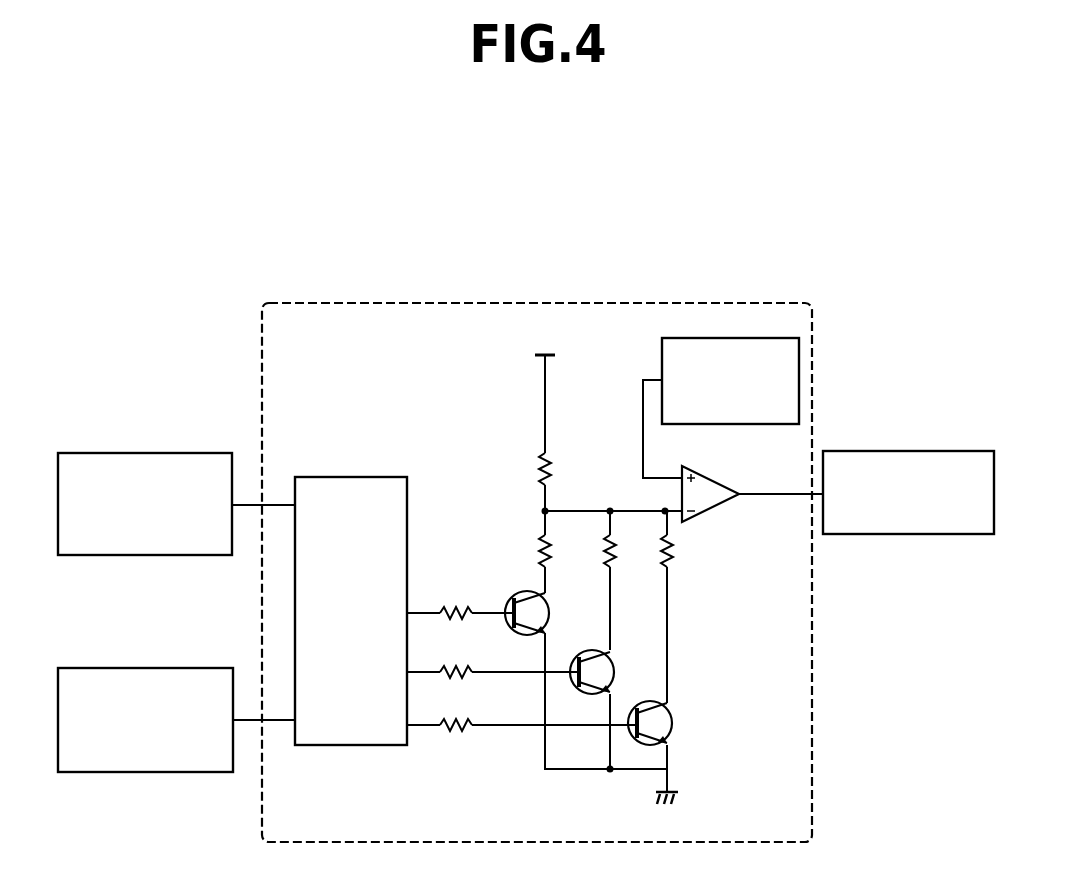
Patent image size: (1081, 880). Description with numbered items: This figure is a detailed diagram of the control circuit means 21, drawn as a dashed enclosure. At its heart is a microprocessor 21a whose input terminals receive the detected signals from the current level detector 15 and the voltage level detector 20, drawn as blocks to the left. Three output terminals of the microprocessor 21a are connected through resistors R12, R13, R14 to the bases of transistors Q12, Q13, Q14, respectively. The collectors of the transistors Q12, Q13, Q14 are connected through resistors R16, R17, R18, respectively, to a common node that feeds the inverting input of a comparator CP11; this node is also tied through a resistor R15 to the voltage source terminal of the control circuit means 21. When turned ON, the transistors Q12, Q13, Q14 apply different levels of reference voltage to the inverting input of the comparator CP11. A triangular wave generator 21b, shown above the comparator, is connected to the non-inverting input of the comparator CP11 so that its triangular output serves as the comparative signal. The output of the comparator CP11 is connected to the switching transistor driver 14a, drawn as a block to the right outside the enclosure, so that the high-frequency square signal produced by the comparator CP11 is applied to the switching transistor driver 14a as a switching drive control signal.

The control circuit means 21 is at (490, 303).
The microprocessor 21a is at (355, 481).
The triangular wave generator 21b is at (662, 354).
The current level detector 15 is at (95, 453).
The voltage level detector 20 is at (203, 668).
The switching transistor driver 14a is at (994, 492).
The comparator CP11 is at (704, 492).
The transistor Q12 is at (549, 608).
The transistor Q13 is at (609, 666).
The transistor Q14 is at (671, 718).
The resistor R12 is at (457, 605).
The resistor R13 is at (457, 662).
The resistor R14 is at (457, 716).
The resistor R15 is at (567, 469).
The resistor R16 is at (565, 551).
The resistor R17 is at (629, 551).
The resistor R18 is at (685, 551).